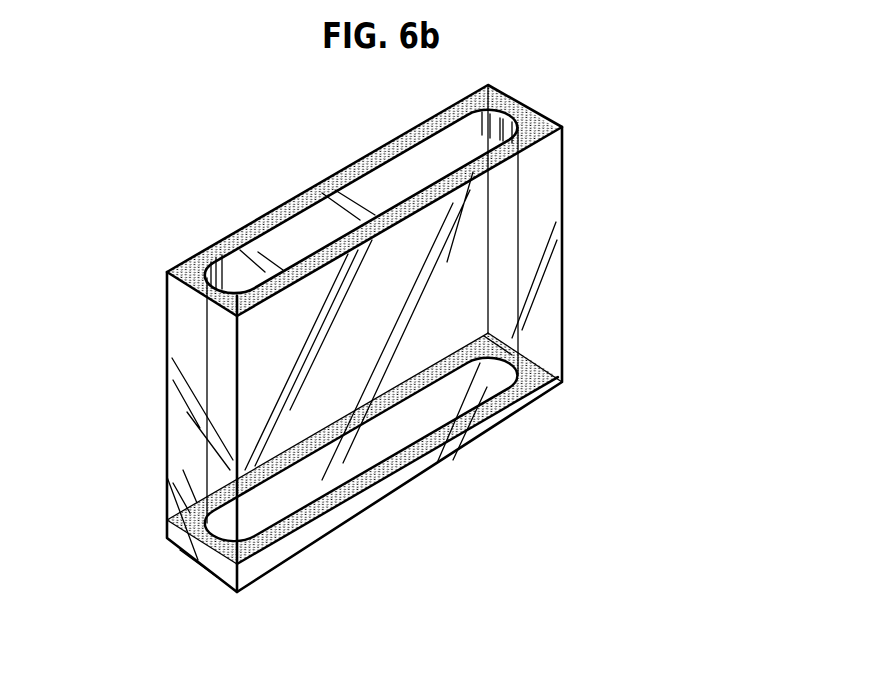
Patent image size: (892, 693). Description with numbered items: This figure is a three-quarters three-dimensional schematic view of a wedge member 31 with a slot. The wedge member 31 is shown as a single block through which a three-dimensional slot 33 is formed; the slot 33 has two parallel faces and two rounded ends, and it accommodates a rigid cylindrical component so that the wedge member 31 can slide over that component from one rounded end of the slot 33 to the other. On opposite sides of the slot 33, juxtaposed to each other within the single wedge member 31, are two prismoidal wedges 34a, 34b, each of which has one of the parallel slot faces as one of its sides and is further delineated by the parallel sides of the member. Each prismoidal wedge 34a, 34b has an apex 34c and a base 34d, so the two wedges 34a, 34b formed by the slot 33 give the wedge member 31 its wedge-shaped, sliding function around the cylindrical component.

The wedge member 31 is at (266, 196).
The slot 33 is at (466, 132).
The prismoidal wedge 34a is at (369, 163).
The prismoidal wedge 34b is at (236, 300).
The apex 34c is at (550, 380).
The base 34d is at (228, 557).